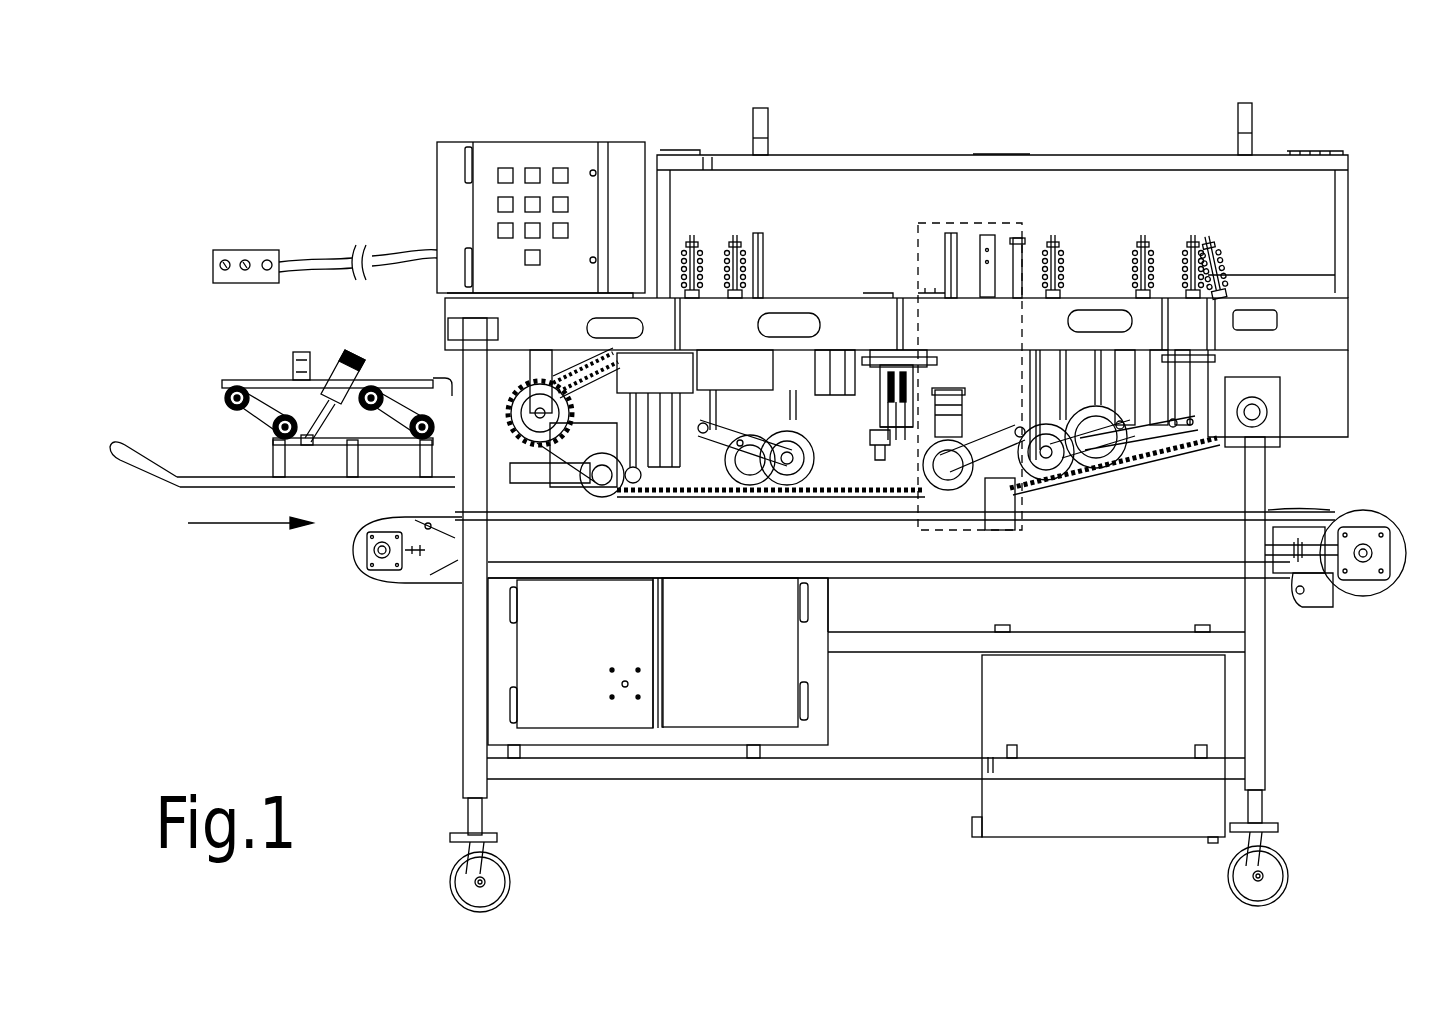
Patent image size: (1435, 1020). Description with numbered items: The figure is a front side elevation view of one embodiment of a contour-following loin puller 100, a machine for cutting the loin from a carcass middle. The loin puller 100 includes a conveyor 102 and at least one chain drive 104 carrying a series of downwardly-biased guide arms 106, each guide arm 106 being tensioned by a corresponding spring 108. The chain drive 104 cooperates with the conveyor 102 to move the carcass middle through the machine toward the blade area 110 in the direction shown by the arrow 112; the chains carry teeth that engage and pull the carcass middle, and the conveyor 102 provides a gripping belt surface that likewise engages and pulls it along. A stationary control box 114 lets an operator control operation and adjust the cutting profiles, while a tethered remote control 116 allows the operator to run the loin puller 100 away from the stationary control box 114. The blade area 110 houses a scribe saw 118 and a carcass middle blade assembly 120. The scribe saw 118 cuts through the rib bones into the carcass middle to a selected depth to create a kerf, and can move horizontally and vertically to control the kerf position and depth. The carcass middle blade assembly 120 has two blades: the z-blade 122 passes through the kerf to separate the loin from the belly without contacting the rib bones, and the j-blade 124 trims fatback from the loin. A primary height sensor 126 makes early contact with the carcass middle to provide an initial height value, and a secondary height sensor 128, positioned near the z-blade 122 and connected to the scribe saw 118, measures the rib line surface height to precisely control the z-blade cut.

The contour-following loin puller 100 is at (1350, 72).
The conveyor 102 is at (1345, 503).
The chain drive 104 is at (590, 357).
The guide arm 106 is at (775, 447).
The spring 108 is at (703, 247).
The blade area 110 is at (988, 223).
The arrow 112 is at (263, 525).
The stationary control box 114 is at (517, 142).
The tethered remote control 116 is at (233, 250).
The scribe saw 118 is at (920, 497).
The carcass middle blade assembly 120 is at (1025, 384).
The z-blade 122 is at (1000, 478).
The j-blade 124 is at (1015, 485).
The primary height sensor 126 is at (767, 235).
The secondary height sensor 128 is at (952, 267).